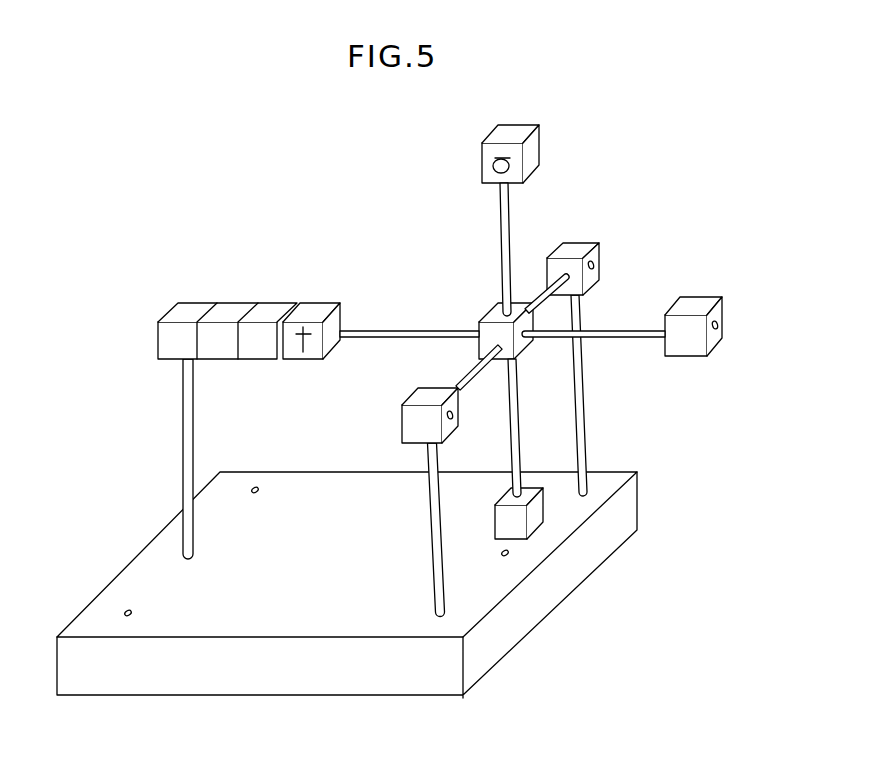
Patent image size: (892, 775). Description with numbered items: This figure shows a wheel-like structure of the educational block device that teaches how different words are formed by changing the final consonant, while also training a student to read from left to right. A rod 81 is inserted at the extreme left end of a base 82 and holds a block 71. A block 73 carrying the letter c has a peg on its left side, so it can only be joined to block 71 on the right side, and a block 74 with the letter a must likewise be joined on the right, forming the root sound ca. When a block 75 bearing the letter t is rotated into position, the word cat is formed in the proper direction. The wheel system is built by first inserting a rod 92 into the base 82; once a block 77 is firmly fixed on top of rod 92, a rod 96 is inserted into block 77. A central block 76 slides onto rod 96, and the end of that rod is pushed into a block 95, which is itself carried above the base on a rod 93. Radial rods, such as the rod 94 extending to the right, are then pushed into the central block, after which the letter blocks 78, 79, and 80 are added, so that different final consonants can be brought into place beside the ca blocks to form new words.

The block 71 is at (168, 316).
The block 73 is at (232, 302).
The block 74 is at (272, 302).
The block 75 is at (325, 302).
The block 76 is at (487, 310).
The block 77 is at (402, 438).
The block 78 is at (481, 172).
The block 79 is at (718, 357).
The block 80 is at (494, 536).
The rod 81 is at (182, 452).
The base 82 is at (104, 573).
The rod 92 is at (430, 538).
The rod 93 is at (585, 408).
The rod 94 is at (645, 358).
The block 95 is at (605, 255).
The rod 96 is at (478, 372).